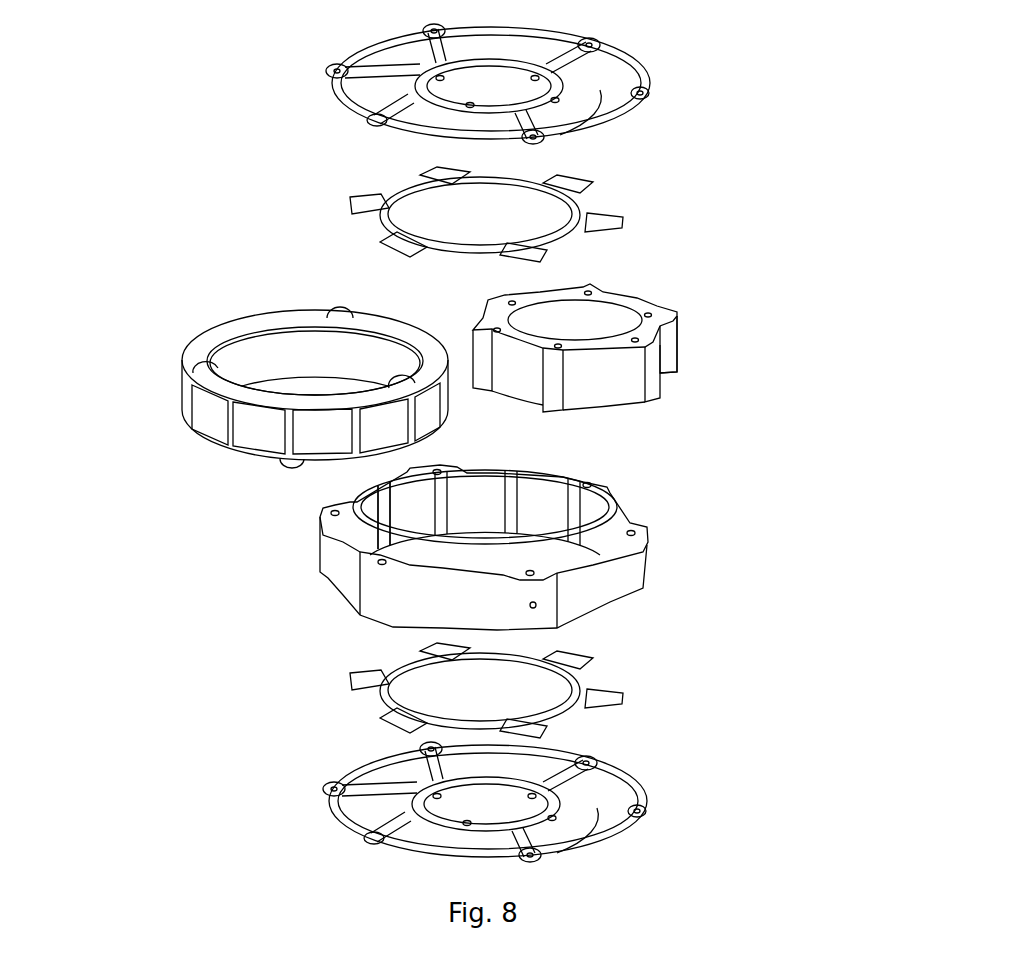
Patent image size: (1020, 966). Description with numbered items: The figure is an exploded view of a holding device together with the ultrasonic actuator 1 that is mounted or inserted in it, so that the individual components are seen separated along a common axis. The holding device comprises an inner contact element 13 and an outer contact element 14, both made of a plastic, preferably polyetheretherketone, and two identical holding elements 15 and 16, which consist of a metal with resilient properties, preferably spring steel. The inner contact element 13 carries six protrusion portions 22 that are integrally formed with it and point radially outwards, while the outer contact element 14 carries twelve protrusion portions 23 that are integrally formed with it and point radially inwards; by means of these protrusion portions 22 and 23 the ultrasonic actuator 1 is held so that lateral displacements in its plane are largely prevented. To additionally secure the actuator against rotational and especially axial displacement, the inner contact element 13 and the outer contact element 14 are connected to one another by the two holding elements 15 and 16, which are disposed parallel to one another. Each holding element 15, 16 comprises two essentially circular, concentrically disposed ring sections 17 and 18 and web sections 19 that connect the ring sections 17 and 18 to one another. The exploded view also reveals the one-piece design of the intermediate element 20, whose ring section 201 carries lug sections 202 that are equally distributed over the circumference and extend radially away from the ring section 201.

The ultrasonic actuator 1 is at (150, 357).
The inner contact element 13 is at (610, 385).
The outer contact element 14 is at (605, 586).
The holding element 15 is at (660, 73).
The holding element 16 is at (296, 749).
The ring section 17 is at (380, 106).
The ring section 18 is at (622, 108).
The web section 19 is at (352, 70).
The intermediate element 20 is at (302, 232).
The ring section 201 is at (590, 200).
The lug section 202 is at (615, 224).
The protrusion portion 22 is at (667, 338).
The protrusion portion 23 is at (385, 522).